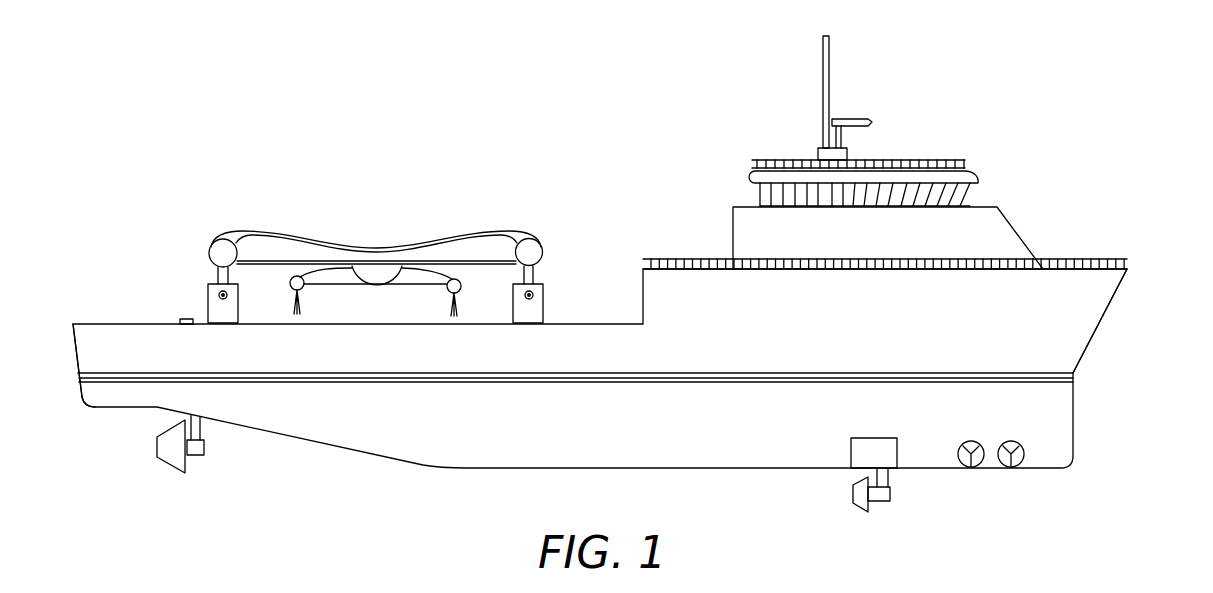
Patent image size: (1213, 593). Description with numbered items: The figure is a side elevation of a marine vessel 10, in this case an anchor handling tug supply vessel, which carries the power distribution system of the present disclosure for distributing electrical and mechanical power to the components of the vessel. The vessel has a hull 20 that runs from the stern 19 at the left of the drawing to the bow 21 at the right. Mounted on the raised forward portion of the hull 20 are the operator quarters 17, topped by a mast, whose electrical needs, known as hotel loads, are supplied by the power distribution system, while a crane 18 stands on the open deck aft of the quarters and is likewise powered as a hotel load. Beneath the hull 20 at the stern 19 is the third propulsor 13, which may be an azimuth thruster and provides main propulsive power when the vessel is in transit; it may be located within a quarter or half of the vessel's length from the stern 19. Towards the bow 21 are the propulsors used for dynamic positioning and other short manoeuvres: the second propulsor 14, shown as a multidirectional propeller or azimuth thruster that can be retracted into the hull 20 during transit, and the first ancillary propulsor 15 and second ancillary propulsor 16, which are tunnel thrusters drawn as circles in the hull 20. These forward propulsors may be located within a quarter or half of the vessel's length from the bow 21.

The marine vessel 10 is at (580, 122).
The third propulsor 13 is at (172, 469).
The second propulsor 14 is at (883, 503).
The first ancillary propulsor 15 is at (958, 462).
The second ancillary propulsor 16 is at (1023, 462).
The operator quarters 17 is at (973, 172).
The crane 18 is at (373, 243).
The stern 19 is at (73, 345).
The hull 20 is at (1080, 330).
The bow 21 is at (1128, 272).